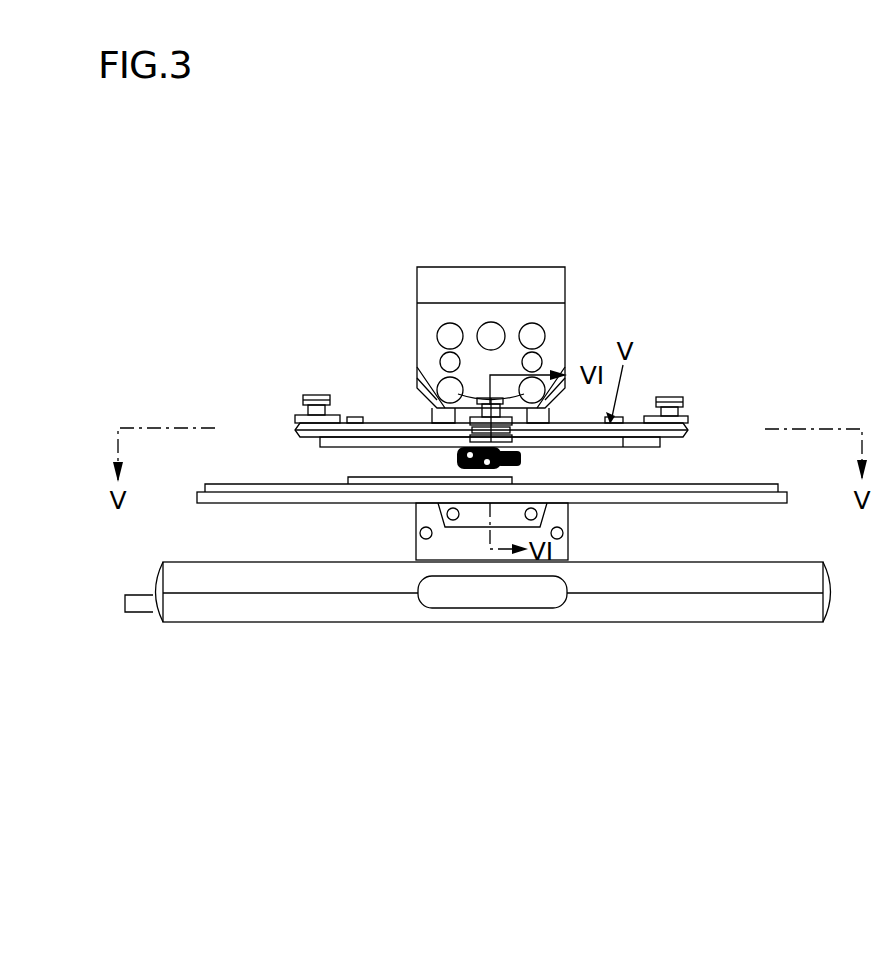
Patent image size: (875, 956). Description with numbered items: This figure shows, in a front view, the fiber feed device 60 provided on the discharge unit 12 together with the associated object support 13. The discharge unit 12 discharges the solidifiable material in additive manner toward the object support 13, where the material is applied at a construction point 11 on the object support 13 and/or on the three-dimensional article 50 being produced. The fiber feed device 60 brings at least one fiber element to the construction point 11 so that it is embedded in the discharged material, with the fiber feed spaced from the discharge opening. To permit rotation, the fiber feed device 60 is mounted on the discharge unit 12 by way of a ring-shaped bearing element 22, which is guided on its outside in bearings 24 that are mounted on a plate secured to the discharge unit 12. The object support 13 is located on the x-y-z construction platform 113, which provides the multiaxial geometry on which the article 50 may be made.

The construction point 11 is at (490, 477).
The discharge unit 12 is at (572, 308).
The object support 13 is at (762, 497).
The bearing element 22 is at (632, 428).
The bearings 24 is at (683, 402).
The three-dimensional article 50 is at (376, 477).
The fiber feed device 60 is at (505, 461).
The x-y-z construction platform 113 is at (755, 605).